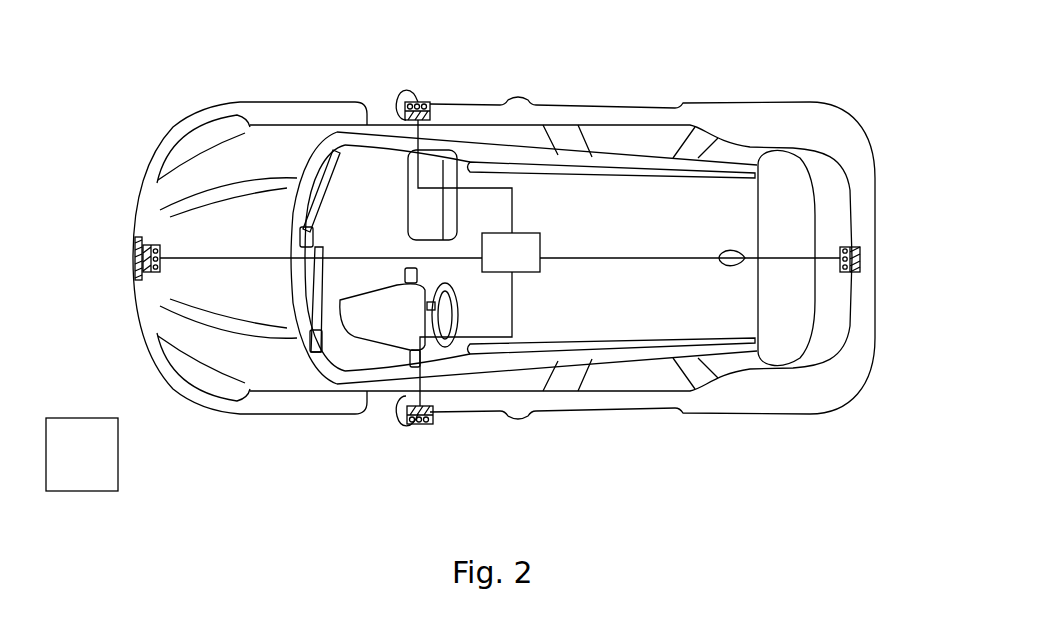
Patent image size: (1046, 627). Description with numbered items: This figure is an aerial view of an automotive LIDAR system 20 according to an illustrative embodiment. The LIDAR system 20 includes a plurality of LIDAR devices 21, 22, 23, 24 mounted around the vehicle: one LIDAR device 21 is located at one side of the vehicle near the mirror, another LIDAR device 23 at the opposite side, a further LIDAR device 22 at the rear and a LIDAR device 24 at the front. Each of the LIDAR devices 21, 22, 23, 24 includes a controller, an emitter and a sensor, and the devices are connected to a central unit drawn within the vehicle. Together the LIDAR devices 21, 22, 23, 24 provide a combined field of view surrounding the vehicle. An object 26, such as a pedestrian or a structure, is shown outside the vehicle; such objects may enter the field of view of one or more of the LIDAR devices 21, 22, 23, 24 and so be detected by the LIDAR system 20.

The automotive LIDAR system 20 is at (180, 102).
The LIDAR device 21 is at (429, 103).
The LIDAR device 22 is at (861, 262).
The LIDAR device 23 is at (431, 424).
The LIDAR device 24 is at (134, 253).
The object 26 is at (87, 465).